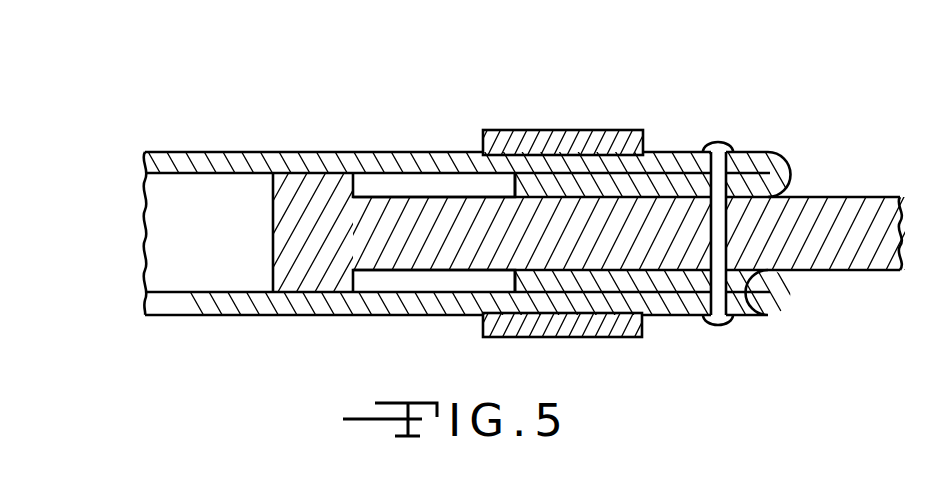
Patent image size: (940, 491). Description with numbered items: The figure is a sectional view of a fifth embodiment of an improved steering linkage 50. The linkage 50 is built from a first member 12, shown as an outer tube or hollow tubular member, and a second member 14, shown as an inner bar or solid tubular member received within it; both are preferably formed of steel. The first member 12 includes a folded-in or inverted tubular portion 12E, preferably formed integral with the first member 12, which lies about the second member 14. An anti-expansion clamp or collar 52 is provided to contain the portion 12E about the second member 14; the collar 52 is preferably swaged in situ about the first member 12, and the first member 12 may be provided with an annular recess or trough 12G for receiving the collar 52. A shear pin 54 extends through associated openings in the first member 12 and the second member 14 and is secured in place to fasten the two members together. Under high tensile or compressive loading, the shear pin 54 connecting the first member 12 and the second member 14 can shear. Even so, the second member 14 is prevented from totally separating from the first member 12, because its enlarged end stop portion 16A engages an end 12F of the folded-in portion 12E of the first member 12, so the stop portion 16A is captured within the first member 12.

The first member 12 is at (201, 146).
The enlarged stop portion 16A is at (313, 193).
The end of the portion 12E 12F is at (513, 188).
The folded-in tubular portion 12E is at (527, 280).
The anti-expansion collar 52 is at (522, 130).
The annular recess 12G is at (593, 337).
The steering linkage 50 is at (620, 109).
The shear pin 54 is at (718, 142).
The second member 14 is at (811, 187).